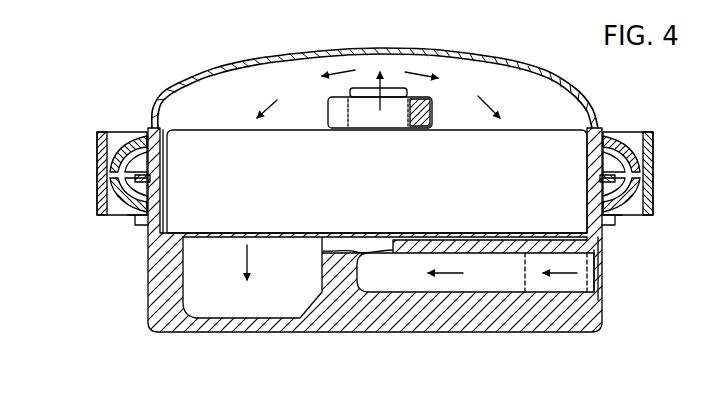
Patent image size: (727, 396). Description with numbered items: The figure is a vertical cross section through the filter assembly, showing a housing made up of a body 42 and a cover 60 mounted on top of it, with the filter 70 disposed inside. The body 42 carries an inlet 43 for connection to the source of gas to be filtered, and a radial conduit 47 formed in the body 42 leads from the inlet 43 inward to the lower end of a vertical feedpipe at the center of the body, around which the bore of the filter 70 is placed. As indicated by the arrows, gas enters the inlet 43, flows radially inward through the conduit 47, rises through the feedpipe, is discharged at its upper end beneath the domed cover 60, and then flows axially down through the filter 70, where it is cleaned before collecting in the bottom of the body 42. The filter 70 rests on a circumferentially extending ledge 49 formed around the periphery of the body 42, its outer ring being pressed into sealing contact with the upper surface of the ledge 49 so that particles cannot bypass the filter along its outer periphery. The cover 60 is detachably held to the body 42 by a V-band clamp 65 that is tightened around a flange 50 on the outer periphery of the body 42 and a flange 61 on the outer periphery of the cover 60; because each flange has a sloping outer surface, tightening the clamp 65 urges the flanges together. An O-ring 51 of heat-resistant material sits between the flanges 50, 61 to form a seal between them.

The housing body 42 is at (145, 292).
The inlet 43 is at (606, 273).
The radial conduit 47 is at (482, 272).
The ledge 49 is at (170, 230).
The flange 50 is at (132, 216).
The O-ring 51 is at (133, 187).
The cover 60 is at (283, 58).
The flange 61 is at (130, 157).
The V-band clamp 65 is at (97, 163).
The filter 70 is at (375, 181).